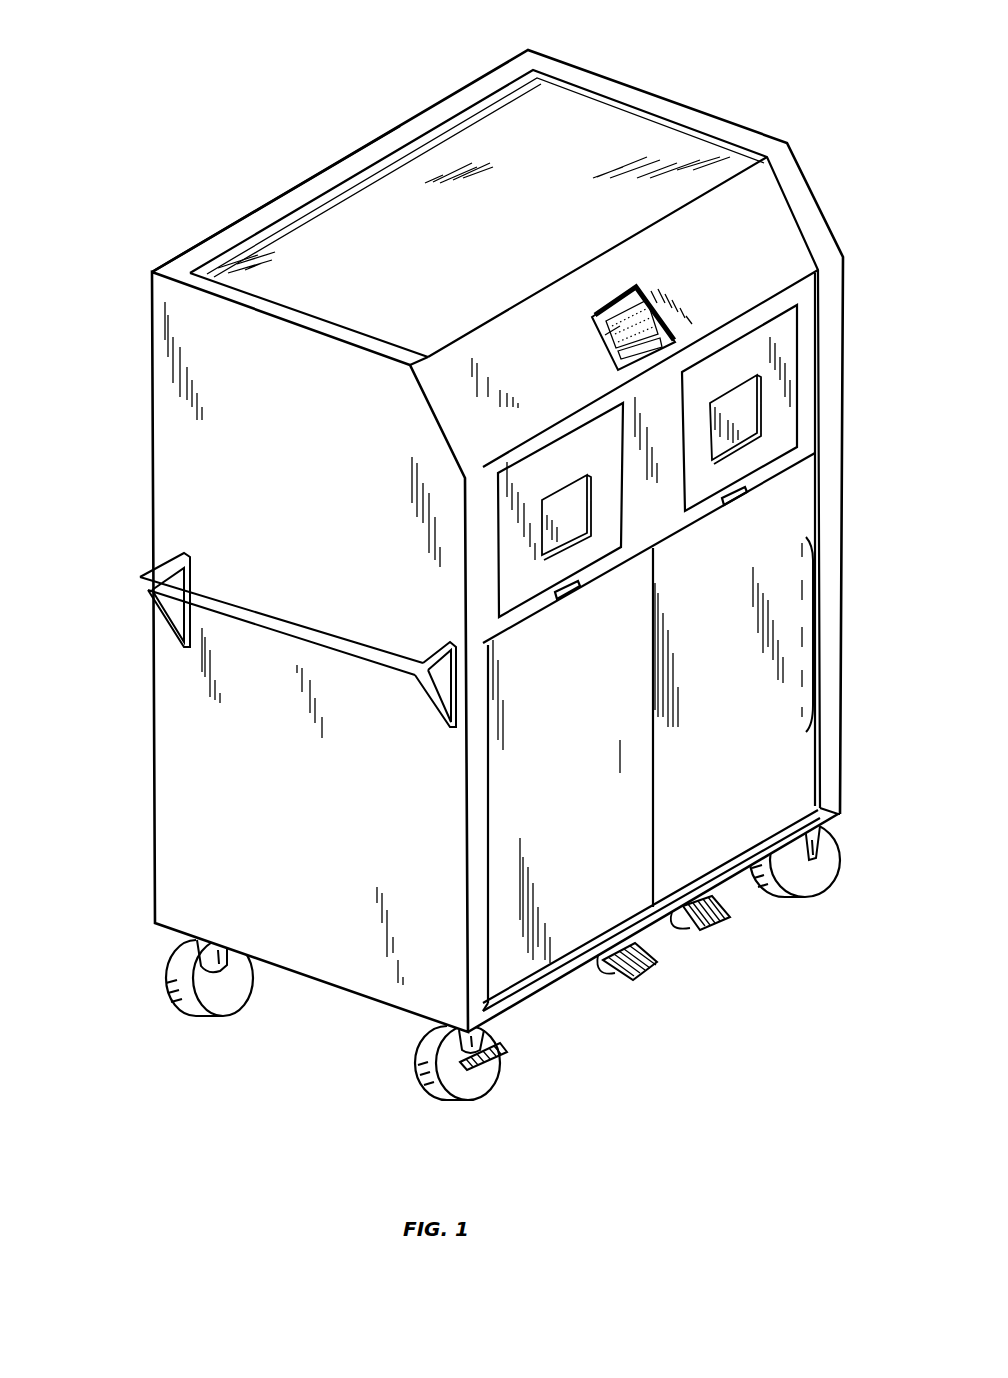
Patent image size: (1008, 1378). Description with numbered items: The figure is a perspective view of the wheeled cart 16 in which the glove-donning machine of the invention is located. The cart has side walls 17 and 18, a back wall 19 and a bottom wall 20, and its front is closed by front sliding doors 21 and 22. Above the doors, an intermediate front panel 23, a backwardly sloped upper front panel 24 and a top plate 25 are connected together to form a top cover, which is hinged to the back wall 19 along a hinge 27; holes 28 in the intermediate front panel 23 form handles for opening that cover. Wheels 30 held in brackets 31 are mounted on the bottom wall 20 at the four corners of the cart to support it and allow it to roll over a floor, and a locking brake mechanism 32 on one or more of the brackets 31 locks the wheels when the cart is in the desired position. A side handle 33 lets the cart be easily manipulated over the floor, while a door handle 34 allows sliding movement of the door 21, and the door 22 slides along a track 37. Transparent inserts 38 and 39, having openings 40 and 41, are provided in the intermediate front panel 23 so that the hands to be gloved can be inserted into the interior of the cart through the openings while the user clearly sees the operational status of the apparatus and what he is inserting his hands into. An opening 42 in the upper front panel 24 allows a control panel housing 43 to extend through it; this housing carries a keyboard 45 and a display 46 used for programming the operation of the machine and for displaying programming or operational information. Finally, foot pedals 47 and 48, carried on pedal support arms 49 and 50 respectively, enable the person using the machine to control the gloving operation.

The wheeled cart 16 is at (708, 100).
The side wall 17 is at (617, 92).
The side wall 18 is at (352, 983).
The back wall 19 is at (297, 185).
The bottom wall 20 is at (573, 967).
The front sliding door 21 is at (793, 760).
The front sliding door 22 is at (563, 947).
The intermediate front panel 23 is at (808, 332).
The upper front panel 24 is at (778, 222).
The top plate 25 is at (700, 150).
The hinge 27 is at (501, 90).
The holes 28 is at (732, 503).
The wheels 30 is at (205, 1010).
The brackets 31 is at (223, 972).
The locking brake mechanism 32 is at (503, 1045).
The side handle 33 is at (243, 603).
The door handle 34 is at (815, 647).
The track 37 is at (820, 800).
The transparent insert 38 is at (783, 428).
The transparent insert 39 is at (515, 480).
The opening 40 is at (748, 408).
The opening 41 is at (552, 532).
The opening 42 is at (632, 290).
The control panel housing 43 is at (653, 318).
The keyboard 45 is at (617, 322).
The display 46 is at (690, 312).
The foot pedal 47 is at (733, 922).
The foot pedal 48 is at (655, 958).
The pedal support arm 49 is at (683, 930).
The pedal support arm 50 is at (613, 970).